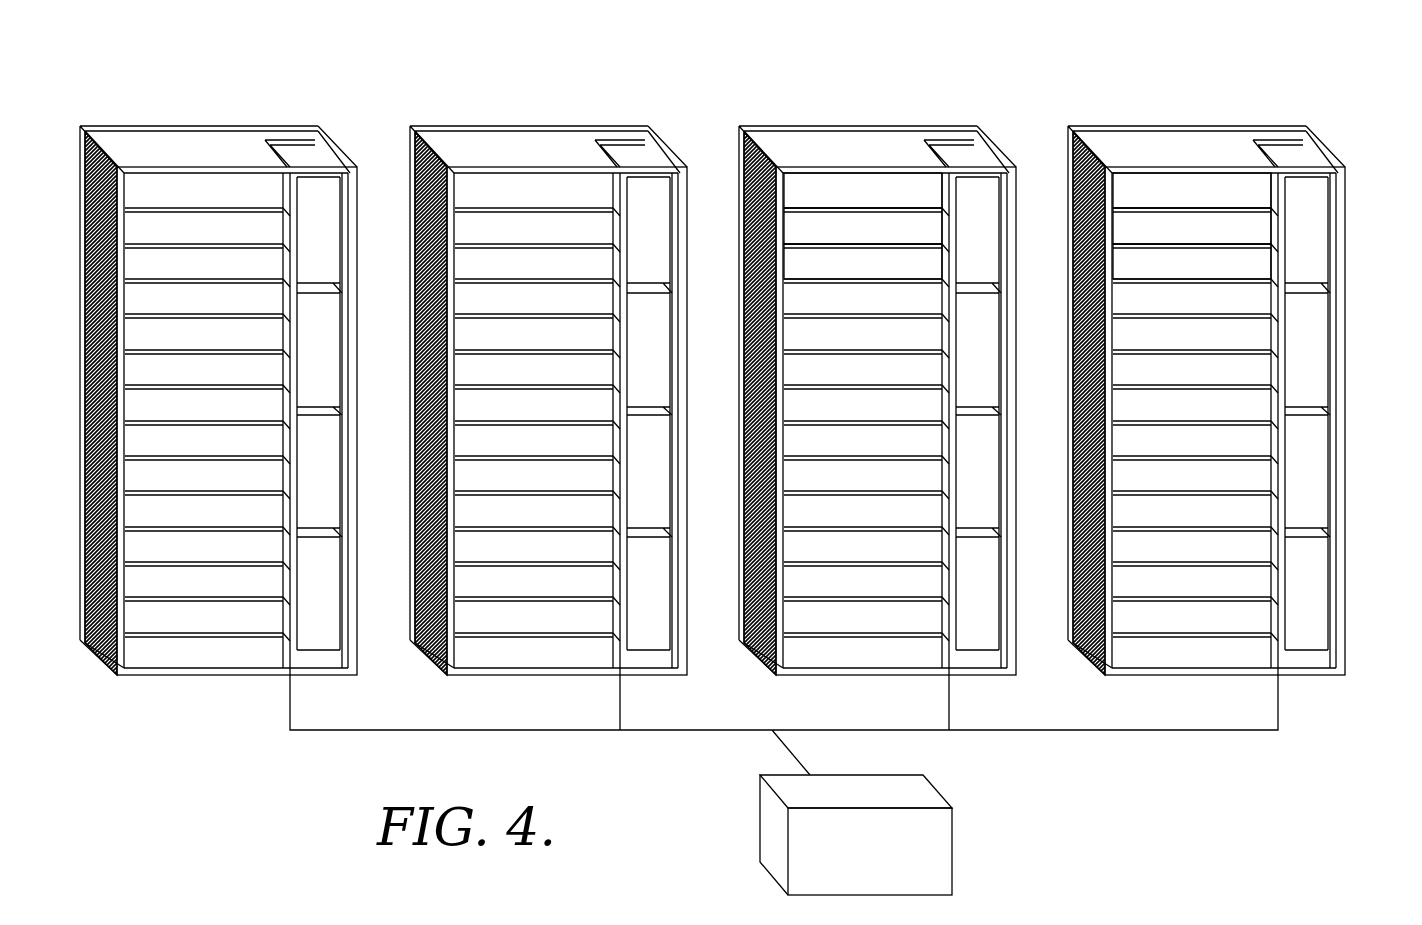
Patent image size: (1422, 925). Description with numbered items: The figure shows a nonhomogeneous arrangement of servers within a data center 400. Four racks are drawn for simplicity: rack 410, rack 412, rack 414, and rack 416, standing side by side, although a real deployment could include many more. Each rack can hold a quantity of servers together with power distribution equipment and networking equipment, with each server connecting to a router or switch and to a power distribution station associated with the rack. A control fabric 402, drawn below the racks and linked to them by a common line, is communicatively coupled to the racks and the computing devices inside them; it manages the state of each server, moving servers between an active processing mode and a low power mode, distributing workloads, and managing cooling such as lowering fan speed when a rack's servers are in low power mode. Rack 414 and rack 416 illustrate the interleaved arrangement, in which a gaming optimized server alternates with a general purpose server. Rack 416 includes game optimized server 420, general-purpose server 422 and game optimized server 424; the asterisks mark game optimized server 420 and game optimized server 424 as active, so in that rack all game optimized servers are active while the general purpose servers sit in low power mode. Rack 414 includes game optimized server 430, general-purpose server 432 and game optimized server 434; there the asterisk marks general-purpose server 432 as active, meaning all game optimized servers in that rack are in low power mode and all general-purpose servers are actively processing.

The data center 400 is at (324, 52).
The control fabric 402 is at (757, 832).
The rack 410 is at (207, 126).
The rack 412 is at (537, 126).
The rack 414 is at (902, 400).
The rack 416 is at (1237, 385).
The game optimized server 420 is at (1268, 188).
The general-purpose server 422 is at (1268, 222).
The game optimized server 424 is at (1268, 258).
The game optimized server 430 is at (938, 185).
The general-purpose server 432 is at (934, 222).
The game optimized server 434 is at (934, 258).